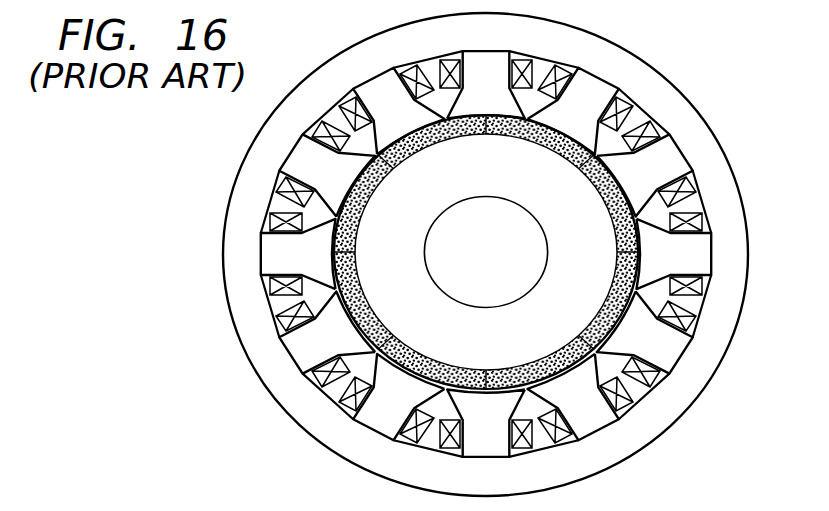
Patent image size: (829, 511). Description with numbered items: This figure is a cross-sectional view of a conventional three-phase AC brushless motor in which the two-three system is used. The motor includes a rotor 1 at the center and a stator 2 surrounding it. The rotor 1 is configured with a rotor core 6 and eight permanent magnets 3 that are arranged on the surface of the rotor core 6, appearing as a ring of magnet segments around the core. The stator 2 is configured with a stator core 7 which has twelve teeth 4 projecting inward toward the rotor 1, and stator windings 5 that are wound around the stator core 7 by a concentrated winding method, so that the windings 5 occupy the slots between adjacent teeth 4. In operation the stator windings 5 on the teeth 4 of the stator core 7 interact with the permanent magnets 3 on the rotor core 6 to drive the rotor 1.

The rotor 1 is at (636, 220).
The stator 2 is at (692, 99).
The permanent magnets 3 is at (641, 265).
The teeth 4 is at (588, 85).
The stator windings 5 is at (353, 103).
The rotor core 6 is at (407, 304).
The stator core 7 is at (366, 443).